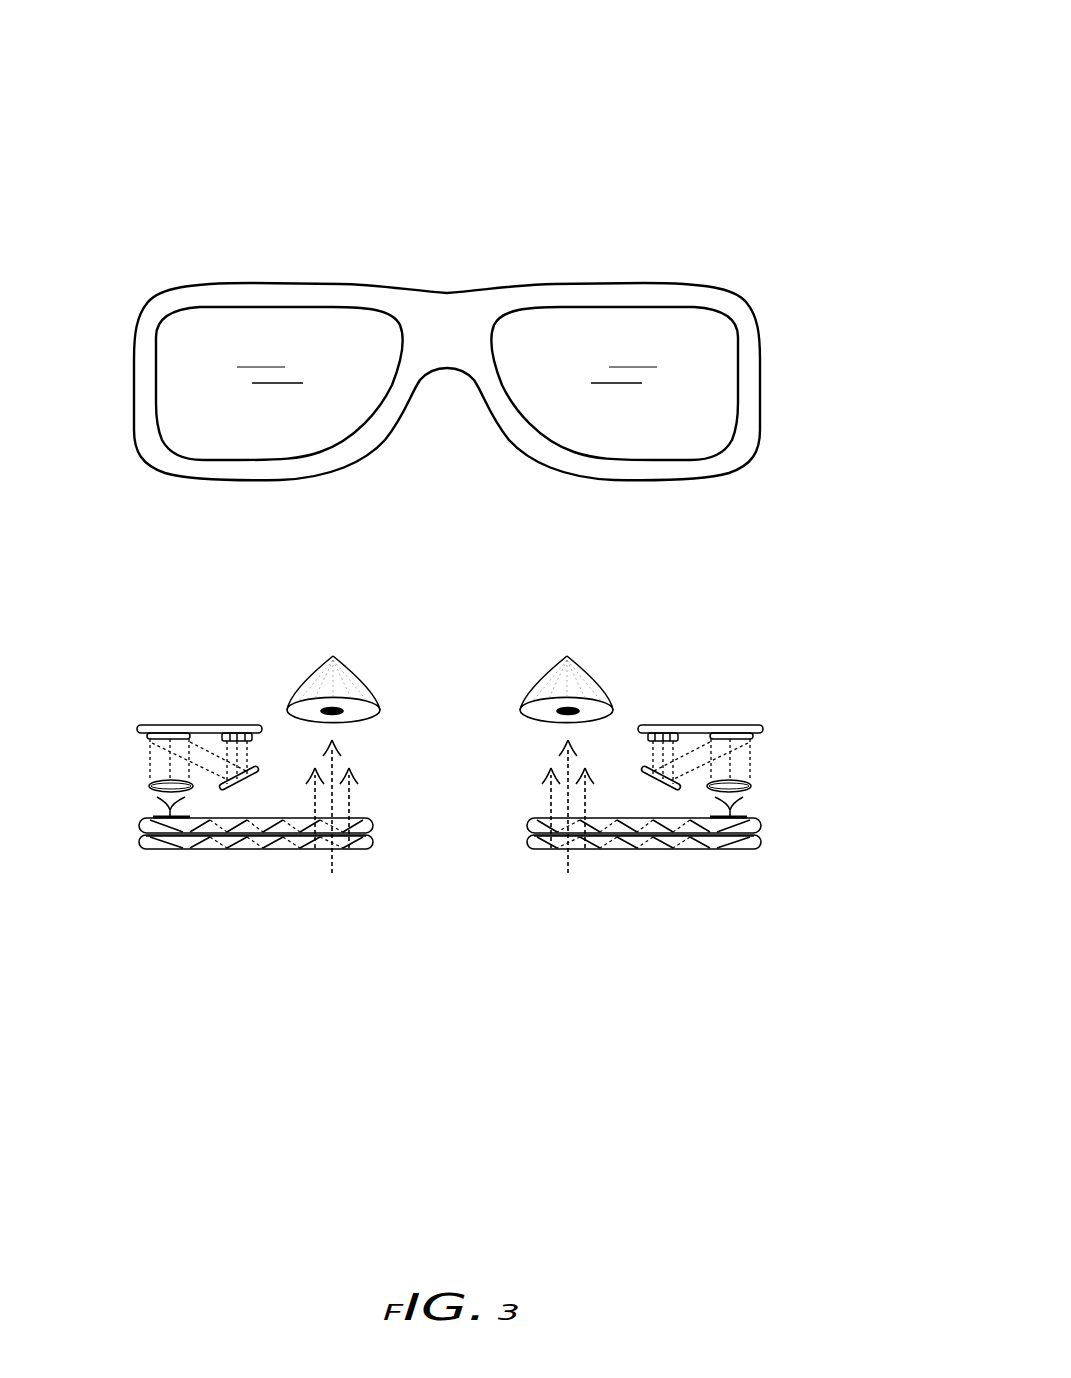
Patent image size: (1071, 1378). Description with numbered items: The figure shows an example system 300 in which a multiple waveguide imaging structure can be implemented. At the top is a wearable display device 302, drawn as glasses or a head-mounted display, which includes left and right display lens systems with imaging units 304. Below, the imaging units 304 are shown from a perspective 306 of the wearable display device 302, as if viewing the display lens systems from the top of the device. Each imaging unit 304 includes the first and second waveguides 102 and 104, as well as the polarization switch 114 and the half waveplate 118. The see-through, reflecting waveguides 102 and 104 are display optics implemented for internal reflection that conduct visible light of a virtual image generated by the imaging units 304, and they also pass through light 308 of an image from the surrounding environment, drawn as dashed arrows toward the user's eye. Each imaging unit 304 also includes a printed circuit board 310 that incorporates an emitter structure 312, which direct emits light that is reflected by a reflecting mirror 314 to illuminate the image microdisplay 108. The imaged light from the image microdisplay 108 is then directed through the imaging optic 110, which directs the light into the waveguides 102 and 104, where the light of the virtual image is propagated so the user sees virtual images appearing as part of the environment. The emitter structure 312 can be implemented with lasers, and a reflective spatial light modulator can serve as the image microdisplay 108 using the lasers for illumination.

The system 300 is at (706, 78).
The wearable display device 302 is at (478, 246).
The imaging units 304 is at (461, 590).
The perspective 306 is at (278, 248).
The light 308 is at (351, 905).
The printed circuit board 310 is at (193, 727).
The emitter structure 312 is at (234, 731).
The reflecting mirror 314 is at (278, 809).
The first waveguide 102 is at (353, 820).
The second waveguide 104 is at (417, 808).
The image microdisplay 108 is at (160, 737).
The imaging optic 110 is at (150, 780).
The polarization switch 114 is at (155, 817).
The half waveplate 118 is at (157, 838).